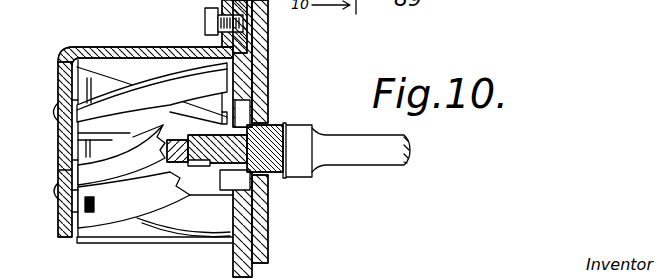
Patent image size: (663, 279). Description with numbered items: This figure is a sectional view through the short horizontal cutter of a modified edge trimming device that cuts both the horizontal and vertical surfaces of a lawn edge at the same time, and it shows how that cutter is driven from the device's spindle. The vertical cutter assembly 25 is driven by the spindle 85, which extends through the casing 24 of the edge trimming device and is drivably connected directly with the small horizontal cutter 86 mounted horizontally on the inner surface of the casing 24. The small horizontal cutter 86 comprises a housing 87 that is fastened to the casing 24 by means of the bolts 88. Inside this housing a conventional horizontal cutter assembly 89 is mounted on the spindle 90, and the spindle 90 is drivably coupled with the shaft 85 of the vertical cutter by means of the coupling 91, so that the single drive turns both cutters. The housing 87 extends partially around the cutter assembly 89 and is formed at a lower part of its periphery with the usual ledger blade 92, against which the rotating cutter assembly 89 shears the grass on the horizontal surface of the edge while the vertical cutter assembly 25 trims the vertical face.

The casing 24 is at (244, 237).
The vertical cutter assembly 25 is at (260, 55).
The spindle 85 is at (362, 158).
The small horizontal cutter 86 is at (118, 37).
The housing 87 is at (58, 76).
The bolts 88 is at (205, 15).
The horizontal cutter assembly 89 is at (85, 217).
The spindle 90 is at (100, 147).
The coupling 91 is at (294, 178).
The ledger blade 92 is at (116, 243).